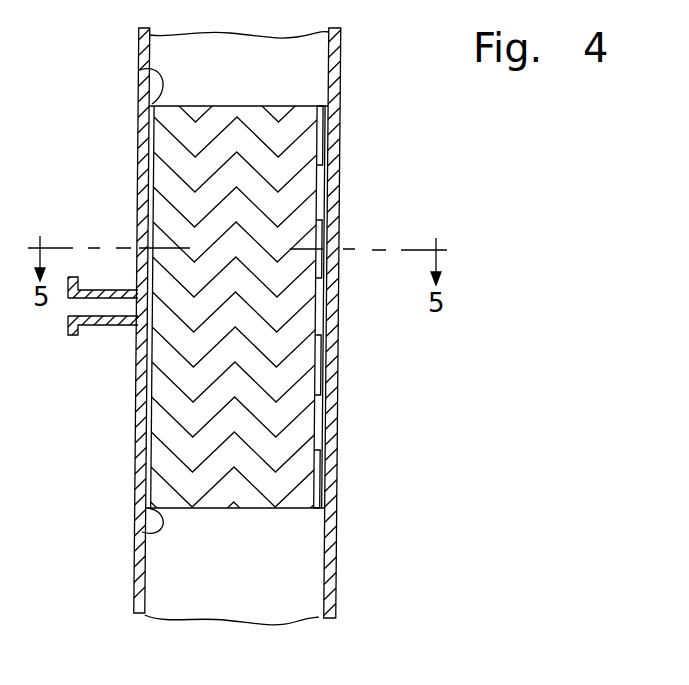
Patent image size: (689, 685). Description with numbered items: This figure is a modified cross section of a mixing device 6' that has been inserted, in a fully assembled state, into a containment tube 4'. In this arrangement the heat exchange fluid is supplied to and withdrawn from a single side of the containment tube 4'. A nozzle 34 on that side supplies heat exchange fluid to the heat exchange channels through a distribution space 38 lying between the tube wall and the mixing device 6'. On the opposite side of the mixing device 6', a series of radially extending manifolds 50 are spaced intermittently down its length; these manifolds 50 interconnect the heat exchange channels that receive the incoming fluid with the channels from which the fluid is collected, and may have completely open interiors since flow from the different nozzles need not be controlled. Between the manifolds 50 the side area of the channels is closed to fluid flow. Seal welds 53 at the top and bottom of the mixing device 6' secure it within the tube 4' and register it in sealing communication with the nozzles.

The containment tube 4' is at (263, 326).
The mixing device 6' is at (270, 312).
The nozzle 34 is at (97, 326).
The distribution space 38 is at (150, 189).
The manifold 50 is at (323, 130).
The seal weld 53 is at (140, 70).